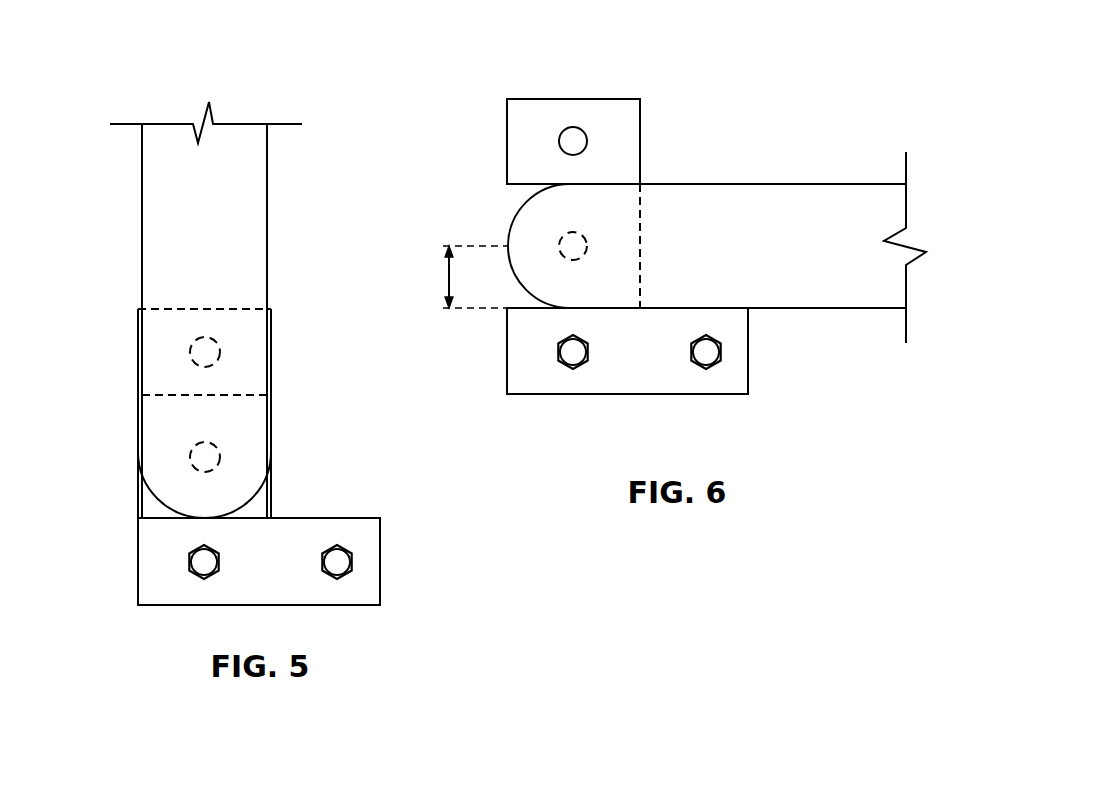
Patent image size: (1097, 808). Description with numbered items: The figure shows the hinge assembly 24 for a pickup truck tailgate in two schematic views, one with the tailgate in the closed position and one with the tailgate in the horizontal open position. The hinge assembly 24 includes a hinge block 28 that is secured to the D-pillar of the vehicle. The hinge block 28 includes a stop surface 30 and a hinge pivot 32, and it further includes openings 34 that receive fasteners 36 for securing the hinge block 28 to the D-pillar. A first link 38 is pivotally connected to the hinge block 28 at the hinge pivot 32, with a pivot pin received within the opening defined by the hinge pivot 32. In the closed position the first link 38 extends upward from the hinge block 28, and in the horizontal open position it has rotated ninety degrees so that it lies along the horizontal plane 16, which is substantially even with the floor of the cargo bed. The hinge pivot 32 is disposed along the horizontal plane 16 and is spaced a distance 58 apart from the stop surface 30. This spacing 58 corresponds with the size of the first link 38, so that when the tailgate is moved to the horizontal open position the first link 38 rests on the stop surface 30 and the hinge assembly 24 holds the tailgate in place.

In FIG. 6, the horizontal plane 16 is at (920, 246).
In FIG. 5, the hinge assembly 24 is at (119, 92).
In FIG. 6, the hinge assembly 24 is at (800, 61).
In FIG. 5, the hinge block 28 is at (138, 518).
In FIG. 6, the hinge block 28 is at (573, 203).
In FIG. 5, the stop surface 30 is at (326, 508).
In FIG. 6, the stop surface 30 is at (678, 298).
In FIG. 5, the hinge pivot 32 is at (195, 458).
In FIG. 6, the hinge pivot 32 is at (574, 232).
In FIG. 5, the openings 34 is at (200, 563).
In FIG. 6, the openings 34 is at (571, 128).
In FIG. 5, the fasteners 36 is at (230, 562).
In FIG. 6, the fasteners 36 is at (548, 350).
In FIG. 5, the first link 38 is at (250, 193).
In FIG. 6, the first link 38 is at (760, 225).
In FIG. 6, the distance 58 is at (448, 275).